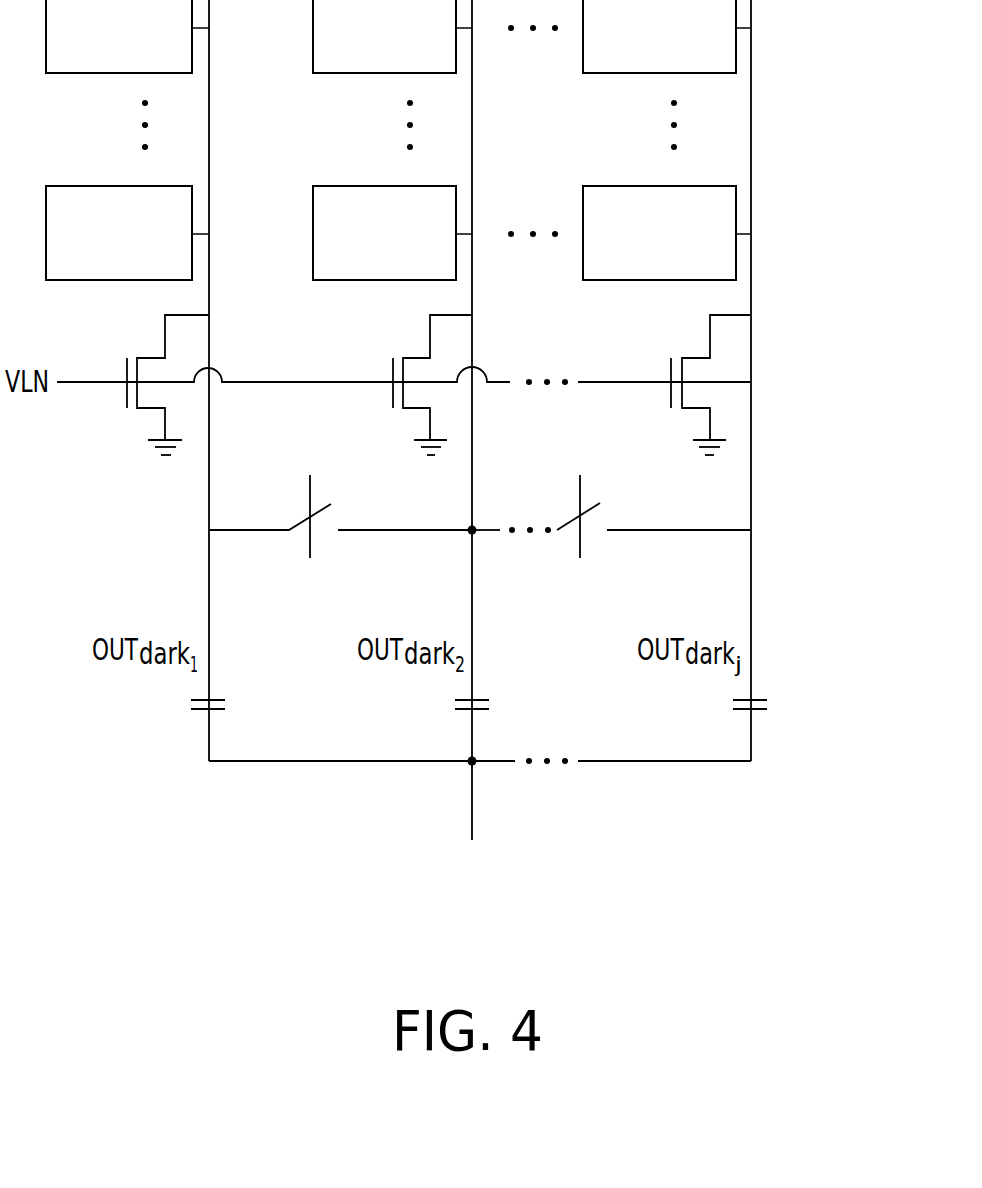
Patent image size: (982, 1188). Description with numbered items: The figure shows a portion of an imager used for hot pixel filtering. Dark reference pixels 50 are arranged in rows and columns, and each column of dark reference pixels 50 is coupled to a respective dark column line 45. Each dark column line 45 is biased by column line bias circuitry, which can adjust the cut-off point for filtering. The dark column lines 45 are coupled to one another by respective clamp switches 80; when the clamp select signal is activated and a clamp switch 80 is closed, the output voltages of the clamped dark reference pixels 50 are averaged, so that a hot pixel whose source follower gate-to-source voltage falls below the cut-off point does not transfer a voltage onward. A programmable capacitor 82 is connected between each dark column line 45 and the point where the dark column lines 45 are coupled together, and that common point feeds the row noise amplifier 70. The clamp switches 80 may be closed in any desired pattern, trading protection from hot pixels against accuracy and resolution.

The dark column line 45 is at (209, 127).
The dark reference pixel 50 is at (398, 140).
The row noise amplifier 70 is at (468, 839).
The clamp switch 80 is at (608, 486).
The programmable capacitor 82 is at (788, 742).